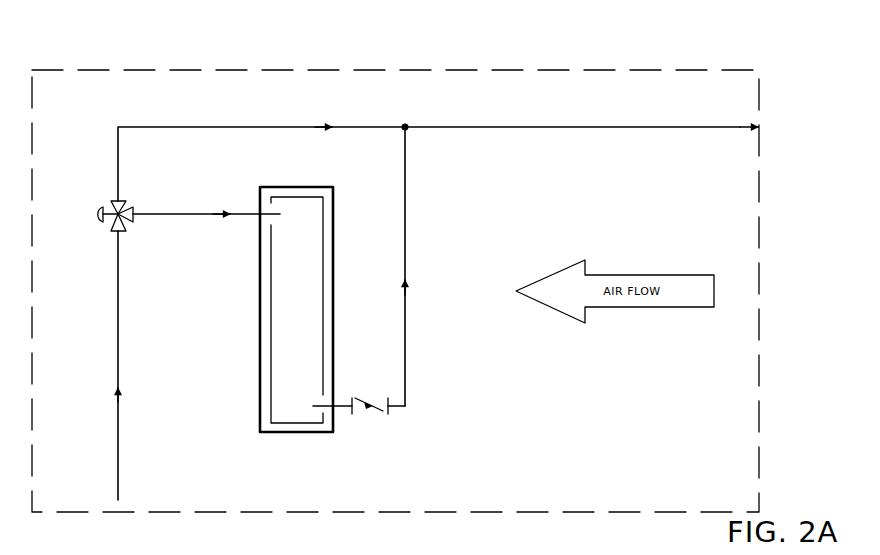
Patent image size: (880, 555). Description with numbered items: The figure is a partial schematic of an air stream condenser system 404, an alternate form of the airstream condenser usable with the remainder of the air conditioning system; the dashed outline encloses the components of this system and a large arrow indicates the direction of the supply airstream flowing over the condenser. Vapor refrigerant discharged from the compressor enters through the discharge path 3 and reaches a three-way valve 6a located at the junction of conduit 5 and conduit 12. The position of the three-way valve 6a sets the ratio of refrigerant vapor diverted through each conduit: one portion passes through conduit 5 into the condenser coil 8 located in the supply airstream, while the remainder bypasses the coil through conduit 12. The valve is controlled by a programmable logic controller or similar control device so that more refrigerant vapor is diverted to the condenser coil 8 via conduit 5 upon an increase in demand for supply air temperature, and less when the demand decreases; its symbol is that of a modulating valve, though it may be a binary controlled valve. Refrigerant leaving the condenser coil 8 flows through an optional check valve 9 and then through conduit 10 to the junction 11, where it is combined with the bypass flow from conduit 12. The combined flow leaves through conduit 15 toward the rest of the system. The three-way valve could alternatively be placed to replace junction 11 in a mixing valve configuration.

The air stream condenser system 404 is at (761, 67).
The discharge path 3 is at (120, 357).
The three-way valve 6a is at (108, 196).
The conduit 12 is at (158, 126).
The conduit 5 is at (149, 210).
The condenser coil 8 is at (302, 184).
The check valve 9 is at (379, 424).
The conduit 10 is at (409, 221).
The junction 11 is at (409, 124).
The conduit 15 is at (617, 125).